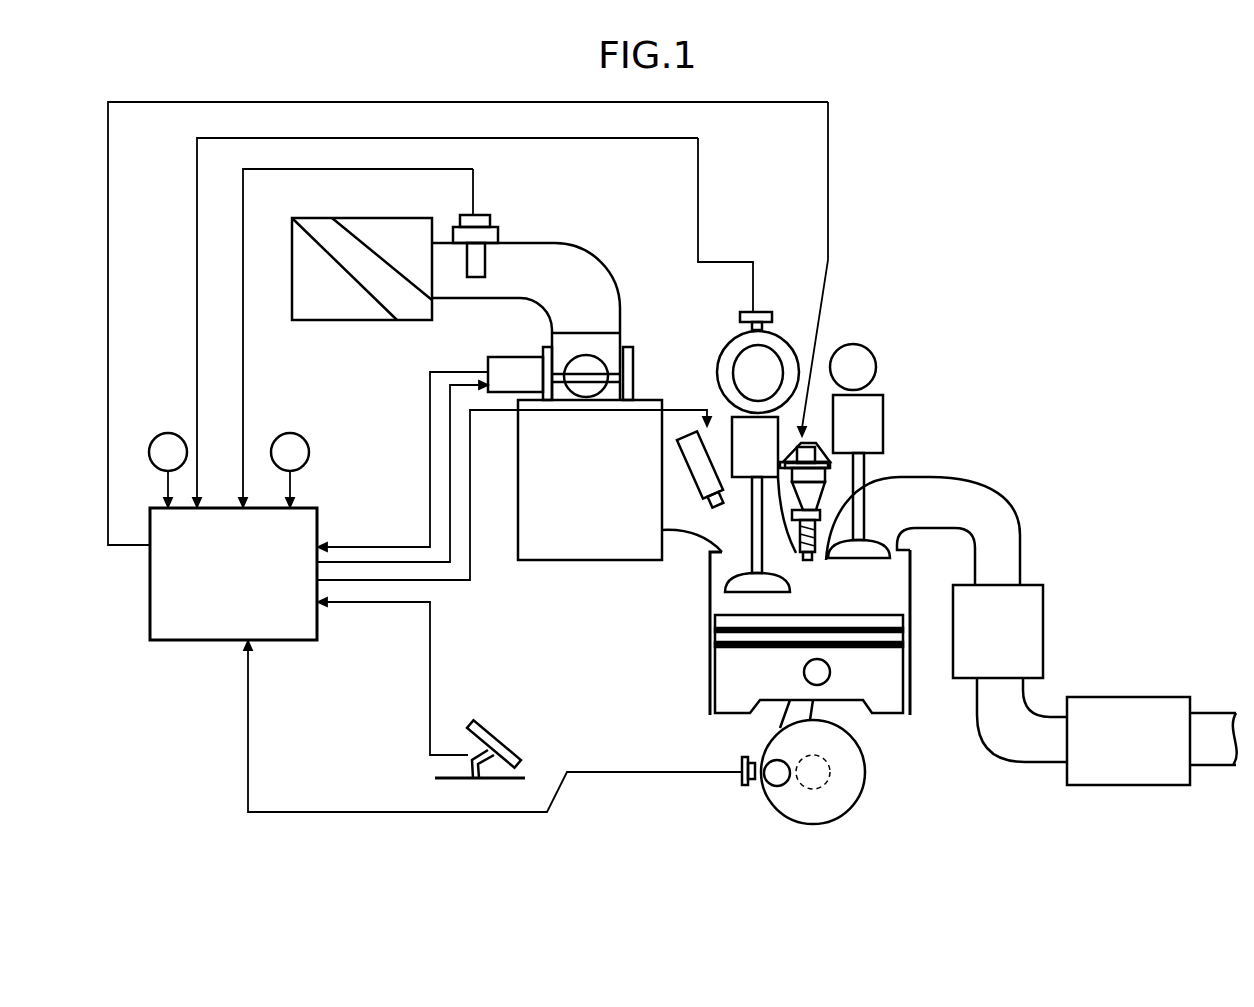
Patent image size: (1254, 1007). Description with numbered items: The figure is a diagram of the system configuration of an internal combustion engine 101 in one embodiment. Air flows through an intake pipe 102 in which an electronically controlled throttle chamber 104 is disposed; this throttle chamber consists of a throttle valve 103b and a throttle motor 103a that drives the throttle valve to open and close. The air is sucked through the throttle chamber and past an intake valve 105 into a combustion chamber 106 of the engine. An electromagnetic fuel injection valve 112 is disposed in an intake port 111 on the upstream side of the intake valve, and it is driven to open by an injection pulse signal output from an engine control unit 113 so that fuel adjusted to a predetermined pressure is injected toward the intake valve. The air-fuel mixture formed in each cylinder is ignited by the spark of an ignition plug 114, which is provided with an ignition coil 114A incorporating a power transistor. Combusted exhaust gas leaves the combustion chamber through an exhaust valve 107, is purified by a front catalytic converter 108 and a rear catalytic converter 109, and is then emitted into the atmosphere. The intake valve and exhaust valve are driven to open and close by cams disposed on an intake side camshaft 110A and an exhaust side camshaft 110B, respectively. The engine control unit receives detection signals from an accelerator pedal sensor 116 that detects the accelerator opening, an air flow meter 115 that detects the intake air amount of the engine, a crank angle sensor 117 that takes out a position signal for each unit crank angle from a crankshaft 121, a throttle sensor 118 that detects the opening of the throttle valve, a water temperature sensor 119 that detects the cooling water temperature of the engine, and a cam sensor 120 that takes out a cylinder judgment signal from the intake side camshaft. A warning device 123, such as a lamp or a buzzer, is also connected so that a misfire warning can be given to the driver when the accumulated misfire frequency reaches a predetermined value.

The internal combustion engine 101 is at (700, 665).
The intake pipe 102 is at (570, 262).
The throttle motor 103a is at (515, 372).
The throttle valve 103b is at (583, 368).
The electronically controlled throttle chamber 104 is at (423, 353).
The intake valve 105 is at (752, 553).
The combustion chamber 106 is at (900, 597).
The exhaust valve 107 is at (867, 470).
The front catalytic converter 108 is at (1030, 605).
The rear catalytic converter 109 is at (1142, 697).
The intake side camshaft 110A is at (772, 365).
The exhaust side camshaft 110B is at (858, 350).
The intake port 111 is at (688, 526).
The electromagnetic fuel injection valve 112 is at (690, 468).
The engine control unit 113 is at (193, 642).
The ignition plug 114 is at (817, 507).
The ignition coil 114A is at (818, 447).
The air flow meter 115 is at (480, 214).
The accelerator pedal sensor 116 is at (460, 779).
The crank angle sensor 117 is at (745, 788).
The throttle sensor 118 is at (633, 378).
The water temperature sensor 119 is at (163, 437).
The cam sensor 120 is at (740, 317).
The crankshaft 121 is at (830, 790).
The warning device 123 is at (298, 440).